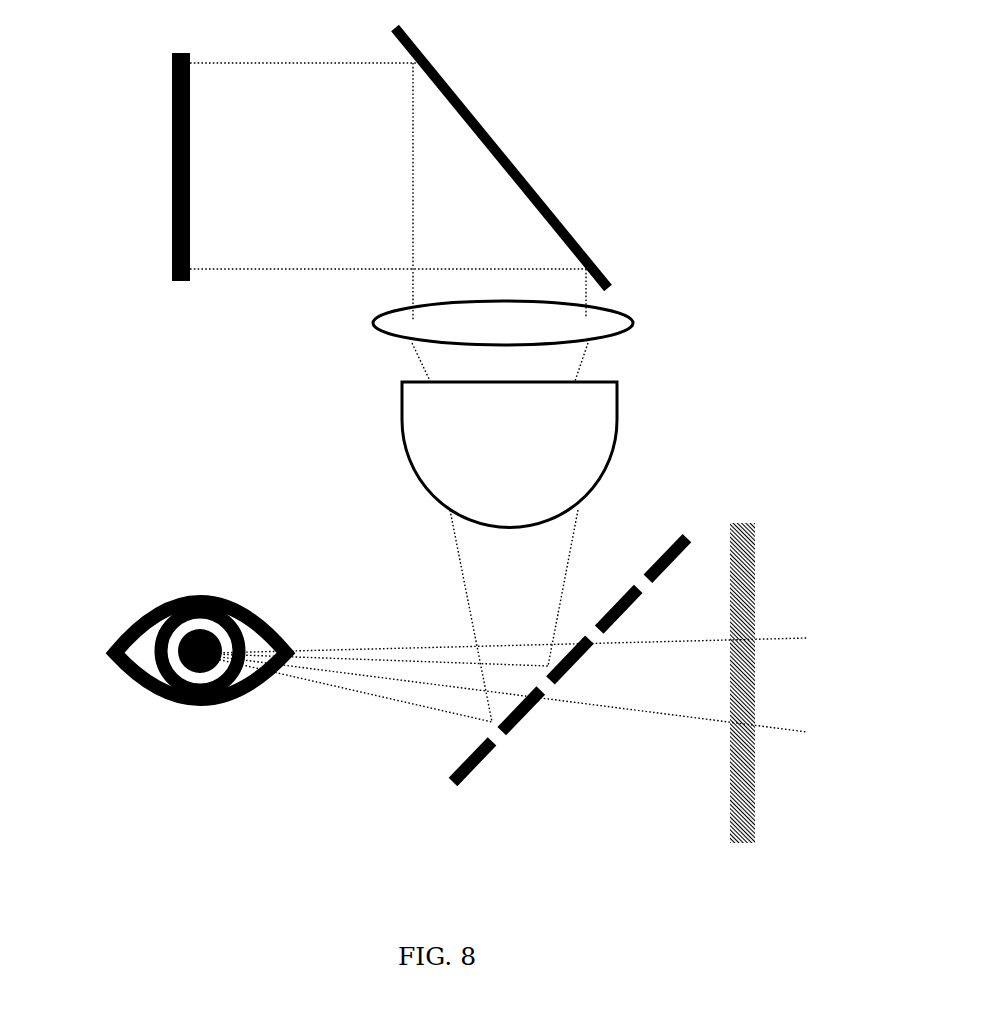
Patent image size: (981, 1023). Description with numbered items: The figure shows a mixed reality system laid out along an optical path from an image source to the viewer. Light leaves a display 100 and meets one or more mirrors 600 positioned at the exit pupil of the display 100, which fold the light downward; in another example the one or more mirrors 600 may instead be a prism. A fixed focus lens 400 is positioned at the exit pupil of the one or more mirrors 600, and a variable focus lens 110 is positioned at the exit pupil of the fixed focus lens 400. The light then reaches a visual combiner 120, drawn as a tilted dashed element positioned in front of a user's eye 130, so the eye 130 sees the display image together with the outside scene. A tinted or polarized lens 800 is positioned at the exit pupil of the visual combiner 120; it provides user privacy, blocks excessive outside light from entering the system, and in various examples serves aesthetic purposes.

The display 100 is at (172, 147).
The one or more mirrors 600 is at (492, 142).
The fixed focus lens 400 is at (565, 321).
The variable focus lens 110 is at (458, 448).
The tinted or polarized lens 800 is at (755, 593).
The user's eye 130 is at (197, 675).
The visual combiner 120 is at (525, 718).